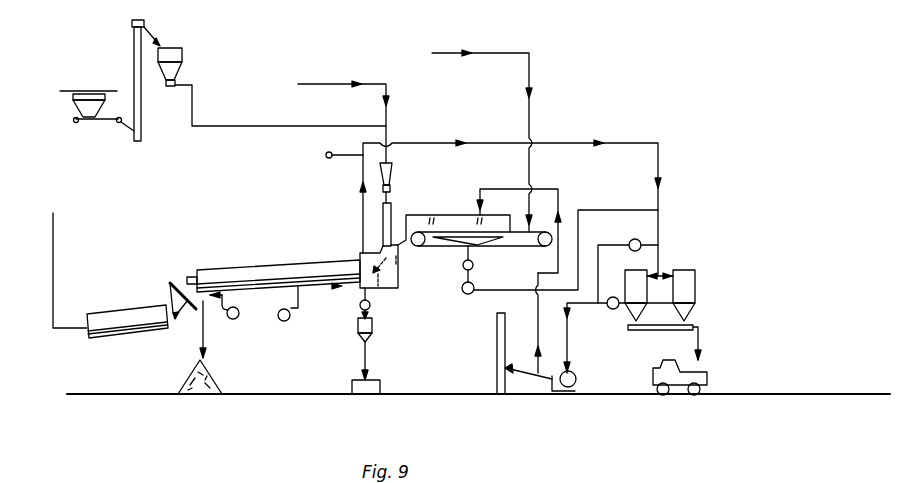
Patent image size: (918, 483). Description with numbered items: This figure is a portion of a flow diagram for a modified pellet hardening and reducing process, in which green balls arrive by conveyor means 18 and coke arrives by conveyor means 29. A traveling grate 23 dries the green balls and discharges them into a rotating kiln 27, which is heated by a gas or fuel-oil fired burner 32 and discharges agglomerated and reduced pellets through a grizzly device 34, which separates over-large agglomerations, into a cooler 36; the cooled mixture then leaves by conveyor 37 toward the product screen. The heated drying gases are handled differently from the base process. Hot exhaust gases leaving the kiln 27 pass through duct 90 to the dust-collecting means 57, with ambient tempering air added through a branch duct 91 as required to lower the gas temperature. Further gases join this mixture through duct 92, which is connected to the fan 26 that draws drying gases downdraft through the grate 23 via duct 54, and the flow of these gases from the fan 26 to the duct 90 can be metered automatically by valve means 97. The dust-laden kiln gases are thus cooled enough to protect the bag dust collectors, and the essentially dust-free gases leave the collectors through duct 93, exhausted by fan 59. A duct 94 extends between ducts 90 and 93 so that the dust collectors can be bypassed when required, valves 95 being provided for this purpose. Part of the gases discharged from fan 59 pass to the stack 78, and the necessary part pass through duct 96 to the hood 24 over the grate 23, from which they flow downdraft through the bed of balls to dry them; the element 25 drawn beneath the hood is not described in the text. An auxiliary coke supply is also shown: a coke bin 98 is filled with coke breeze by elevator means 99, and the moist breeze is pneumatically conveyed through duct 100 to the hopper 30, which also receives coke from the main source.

The conveyor means 18 is at (488, 53).
The traveling grate 23 is at (520, 230).
The hood 24 is at (450, 215).
The conveyor 25 is at (508, 244).
The fan 26 is at (462, 295).
The rotating kiln 27 is at (263, 270).
The conveyor means 29 is at (333, 84).
The hopper 30 is at (395, 168).
The burner 32 is at (190, 290).
The grizzly device 34 is at (193, 310).
The cooler 36 is at (112, 333).
The conveyor 37 is at (53, 241).
The duct 54 is at (462, 262).
The dust-collecting means 57 is at (692, 283).
The fan 59 is at (578, 382).
The stack 78 is at (497, 351).
The duct 90 is at (660, 165).
The branch duct 91 is at (345, 161).
The duct 92 is at (603, 209).
The duct 93 is at (582, 306).
The duct 94 is at (622, 262).
The valves 95 is at (635, 239).
The duct 96 is at (513, 186).
The valve means 97 is at (465, 277).
The coke bin 98 is at (185, 51).
The elevator means 99 is at (134, 58).
The duct 100 is at (240, 128).